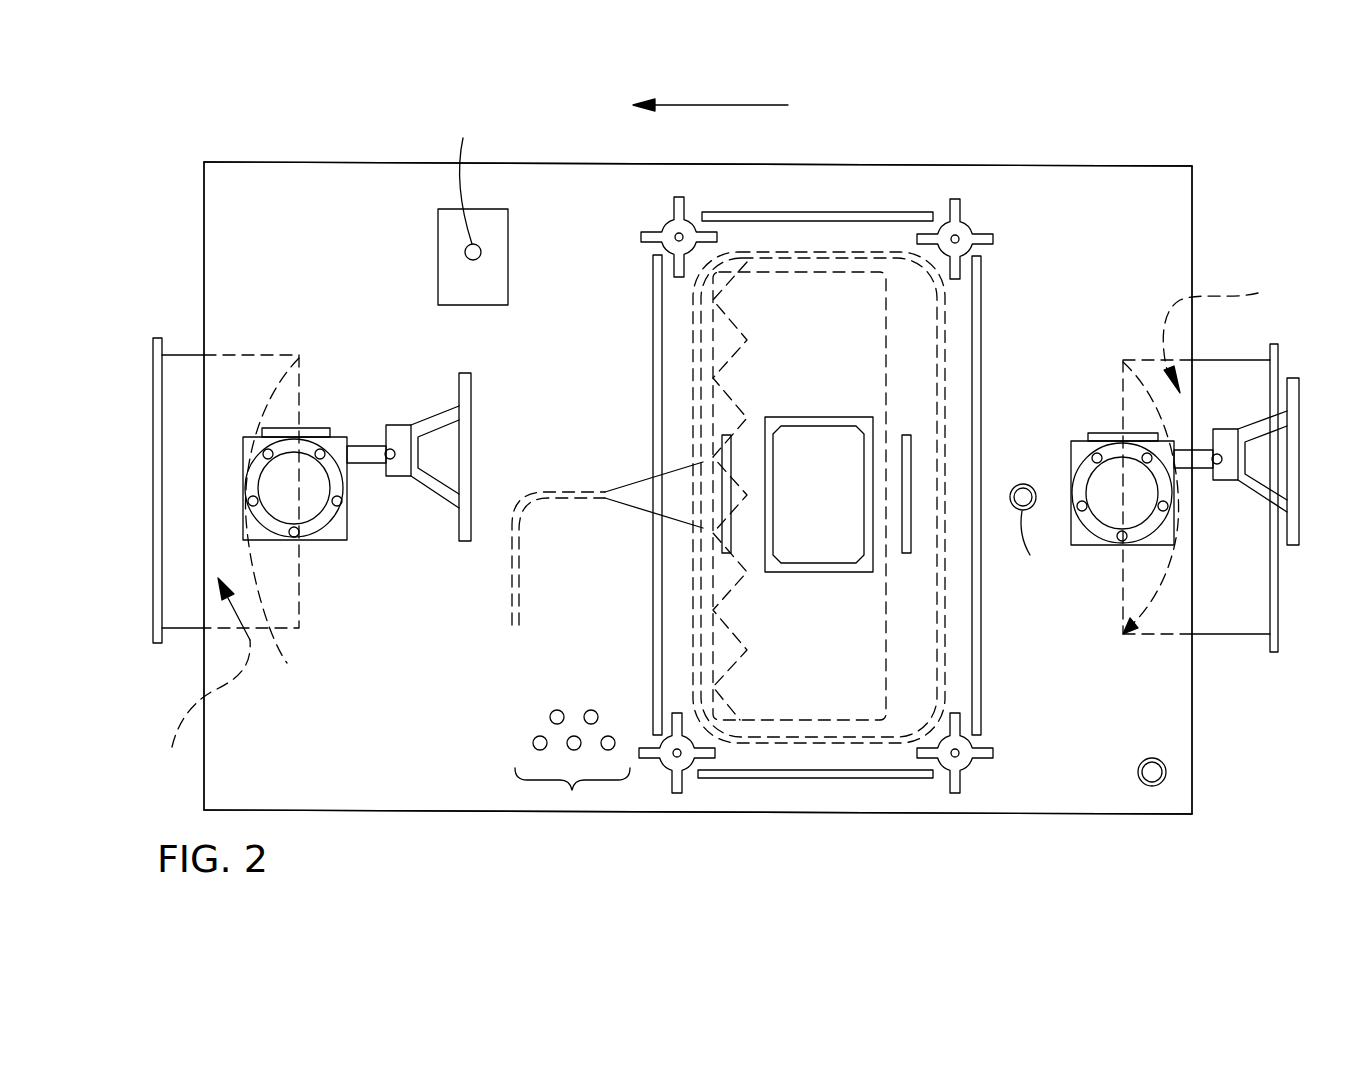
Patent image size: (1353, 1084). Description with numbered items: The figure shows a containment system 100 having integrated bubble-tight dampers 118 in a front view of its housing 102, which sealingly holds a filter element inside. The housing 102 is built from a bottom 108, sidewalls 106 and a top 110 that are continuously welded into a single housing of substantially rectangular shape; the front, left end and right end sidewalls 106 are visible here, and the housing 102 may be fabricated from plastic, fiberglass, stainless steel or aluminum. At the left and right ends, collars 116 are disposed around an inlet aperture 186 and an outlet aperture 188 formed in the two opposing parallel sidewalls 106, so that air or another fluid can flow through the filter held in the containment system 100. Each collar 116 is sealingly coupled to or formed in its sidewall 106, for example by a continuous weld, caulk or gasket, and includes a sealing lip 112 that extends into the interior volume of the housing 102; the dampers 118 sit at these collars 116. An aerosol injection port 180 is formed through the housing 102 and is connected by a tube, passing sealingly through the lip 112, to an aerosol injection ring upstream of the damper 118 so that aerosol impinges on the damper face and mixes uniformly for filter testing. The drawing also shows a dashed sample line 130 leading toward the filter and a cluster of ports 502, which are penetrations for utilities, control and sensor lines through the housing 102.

The containment system 100 is at (1165, 115).
The housing 102 is at (320, 150).
The sidewalls 106 is at (204, 210).
The bottom 108 is at (375, 812).
The top 110 is at (948, 166).
The sealing lip 112 is at (283, 652).
The collars 116 is at (181, 355).
The dampers 118 is at (300, 388).
The sample line 130 is at (507, 587).
The aerosol injection port 180 is at (1146, 786).
The inlet aperture 186 is at (1240, 334).
The outlet aperture 188 is at (200, 679).
The utility penetration ports 502 is at (566, 790).